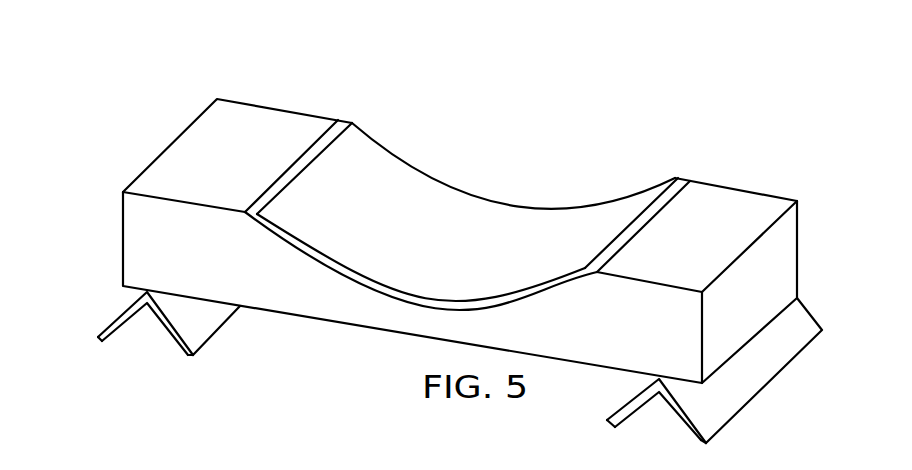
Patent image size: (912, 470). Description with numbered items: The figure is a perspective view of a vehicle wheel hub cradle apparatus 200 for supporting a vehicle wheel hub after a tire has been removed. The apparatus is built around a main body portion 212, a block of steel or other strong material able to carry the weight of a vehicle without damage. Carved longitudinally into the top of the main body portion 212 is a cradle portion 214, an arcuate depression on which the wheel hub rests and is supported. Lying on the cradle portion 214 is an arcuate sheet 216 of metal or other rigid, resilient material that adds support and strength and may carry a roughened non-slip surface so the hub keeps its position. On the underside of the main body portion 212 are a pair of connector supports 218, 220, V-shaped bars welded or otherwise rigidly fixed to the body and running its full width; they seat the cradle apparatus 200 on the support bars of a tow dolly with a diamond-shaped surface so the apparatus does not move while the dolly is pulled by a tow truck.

The vehicle wheel hub cradle apparatus 200 is at (598, 118).
The main body portion 212 is at (198, 152).
The cradle portion 214 is at (398, 175).
The arcuate sheet 216 is at (365, 287).
The connector support 218 is at (97, 328).
The connector support 220 is at (723, 397).